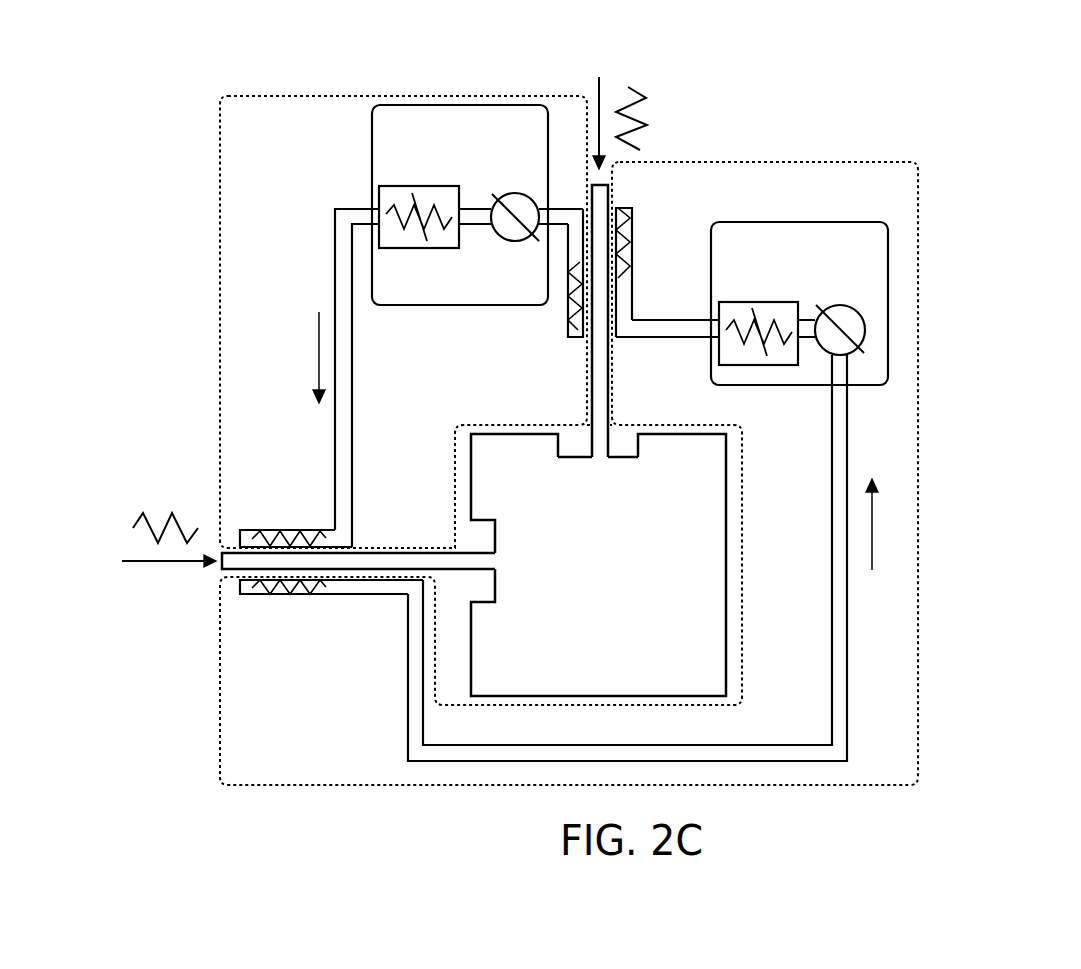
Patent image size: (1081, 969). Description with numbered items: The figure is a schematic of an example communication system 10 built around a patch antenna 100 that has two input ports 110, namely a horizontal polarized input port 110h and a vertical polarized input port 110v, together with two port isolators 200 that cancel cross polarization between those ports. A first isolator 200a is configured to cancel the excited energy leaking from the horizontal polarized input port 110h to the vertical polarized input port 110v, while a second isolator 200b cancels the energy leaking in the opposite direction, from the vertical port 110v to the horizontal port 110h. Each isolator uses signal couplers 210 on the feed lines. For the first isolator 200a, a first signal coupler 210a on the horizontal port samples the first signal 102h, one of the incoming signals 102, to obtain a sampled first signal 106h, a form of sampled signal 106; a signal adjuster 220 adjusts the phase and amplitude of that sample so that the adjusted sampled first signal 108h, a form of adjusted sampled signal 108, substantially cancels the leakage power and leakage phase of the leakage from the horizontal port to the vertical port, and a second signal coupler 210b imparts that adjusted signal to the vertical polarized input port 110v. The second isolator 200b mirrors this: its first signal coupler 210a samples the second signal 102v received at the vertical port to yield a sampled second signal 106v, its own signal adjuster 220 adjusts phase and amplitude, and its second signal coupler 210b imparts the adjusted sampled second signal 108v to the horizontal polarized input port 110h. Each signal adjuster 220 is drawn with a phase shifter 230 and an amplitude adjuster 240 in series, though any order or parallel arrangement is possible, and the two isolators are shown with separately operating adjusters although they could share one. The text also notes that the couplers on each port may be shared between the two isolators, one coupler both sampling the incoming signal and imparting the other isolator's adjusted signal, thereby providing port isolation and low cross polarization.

The communication system 10 is at (555, 415).
The antenna 100 is at (727, 567).
The signal 102 is at (430, 315).
The first signal 102h is at (160, 513).
The second signal 102v is at (640, 116).
The sampled signal 106 is at (406, 459).
The sampled first signal 106h is at (238, 594).
The sampled second signal 106v is at (567, 323).
The adjusted sampled signal 108 is at (471, 377).
The adjusted sampled second signal 108v is at (290, 530).
The adjusted sampled first signal 108h is at (632, 266).
The input port 110 is at (458, 377).
The horizontal polarized input port 110h is at (400, 553).
The vertical polarized input port 110v is at (608, 375).
The isolator 200 is at (569, 440).
The first isolator 200a is at (913, 210).
The second isolator 200b is at (305, 146).
The signal coupler 210 is at (487, 429).
The first signal coupler 210a is at (320, 594).
The second signal coupler 210b is at (695, 192).
The signal adjuster 220 is at (535, 132).
The phase shifter 230 is at (513, 192).
The amplitude adjuster 240 is at (410, 186).